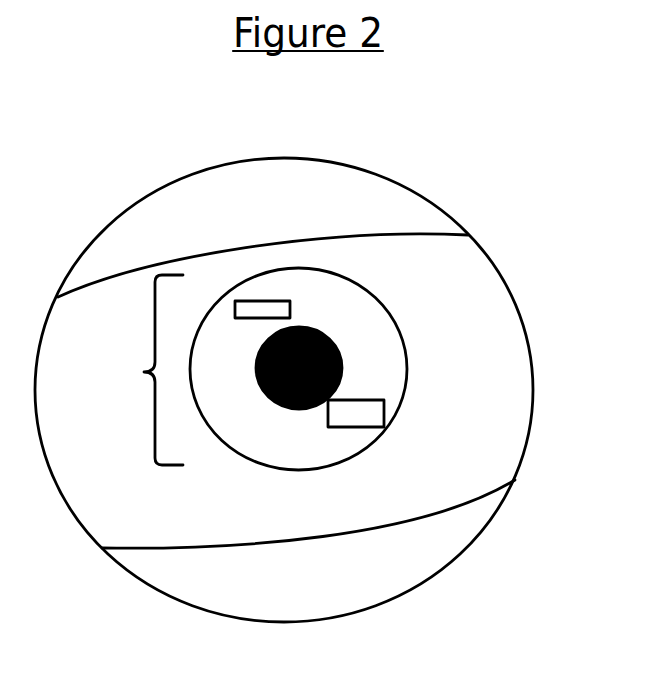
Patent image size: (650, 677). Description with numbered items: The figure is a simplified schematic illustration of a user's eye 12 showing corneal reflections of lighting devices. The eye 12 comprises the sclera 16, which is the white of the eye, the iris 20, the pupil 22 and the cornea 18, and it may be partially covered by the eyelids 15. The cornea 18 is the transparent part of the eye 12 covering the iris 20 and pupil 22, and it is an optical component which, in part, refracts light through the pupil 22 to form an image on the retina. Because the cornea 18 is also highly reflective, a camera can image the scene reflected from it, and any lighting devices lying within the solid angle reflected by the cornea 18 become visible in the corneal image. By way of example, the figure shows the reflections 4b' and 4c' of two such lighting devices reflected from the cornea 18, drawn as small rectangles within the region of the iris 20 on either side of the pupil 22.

The eye 12 is at (397, 182).
The eyelids 15 is at (280, 170).
The sclera 16 is at (488, 302).
The cornea 18 is at (148, 370).
The iris 20 is at (405, 370).
The pupil 22 is at (337, 352).
The reflection 4b' is at (223, 203).
The reflection 4c' is at (459, 444).